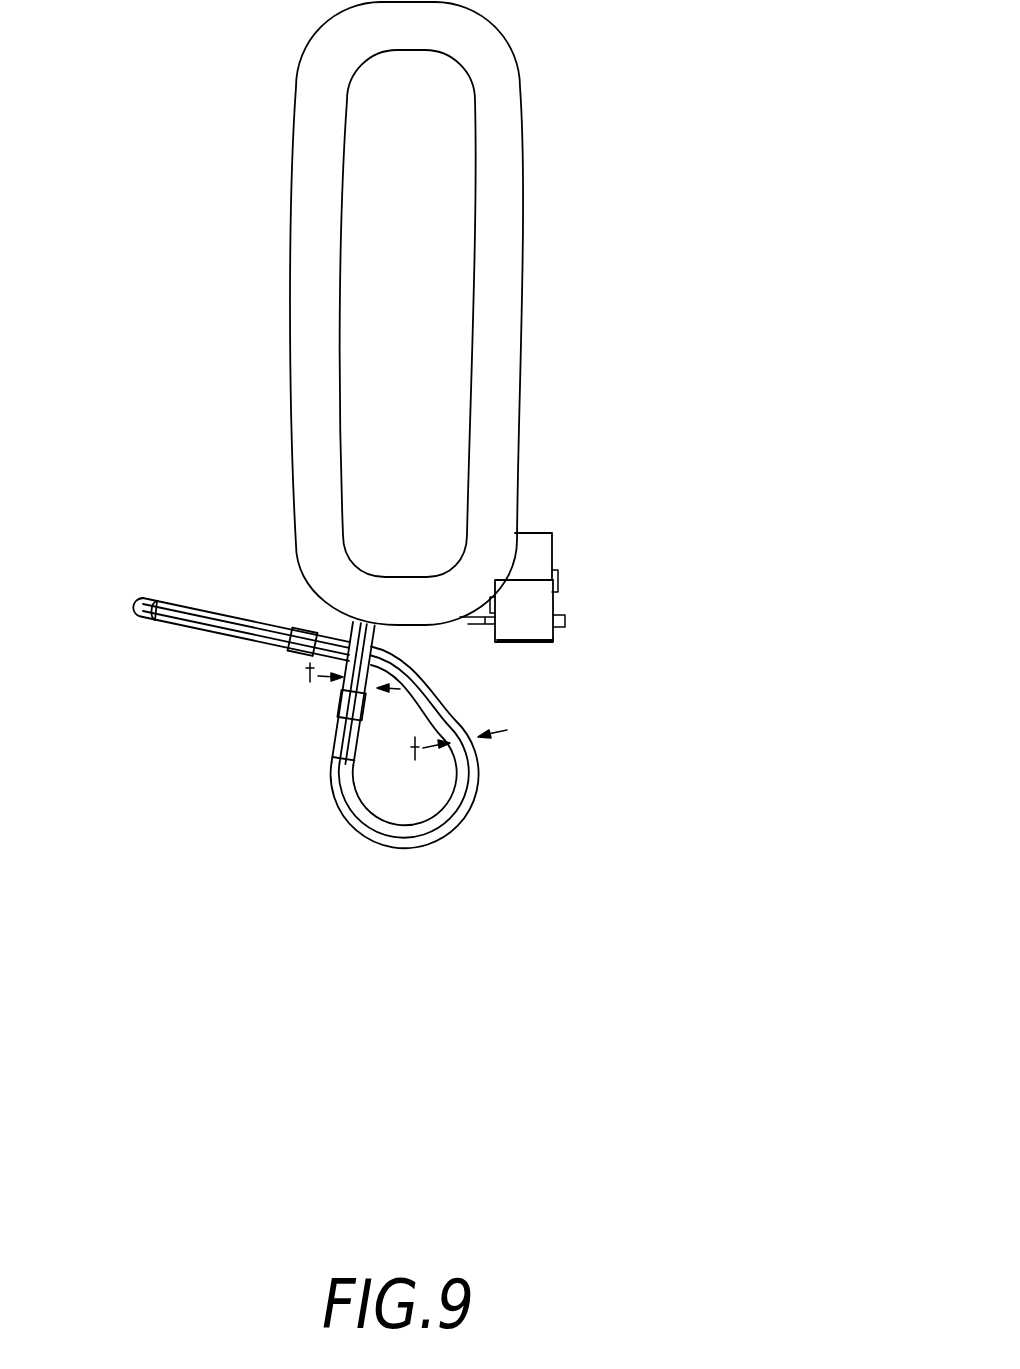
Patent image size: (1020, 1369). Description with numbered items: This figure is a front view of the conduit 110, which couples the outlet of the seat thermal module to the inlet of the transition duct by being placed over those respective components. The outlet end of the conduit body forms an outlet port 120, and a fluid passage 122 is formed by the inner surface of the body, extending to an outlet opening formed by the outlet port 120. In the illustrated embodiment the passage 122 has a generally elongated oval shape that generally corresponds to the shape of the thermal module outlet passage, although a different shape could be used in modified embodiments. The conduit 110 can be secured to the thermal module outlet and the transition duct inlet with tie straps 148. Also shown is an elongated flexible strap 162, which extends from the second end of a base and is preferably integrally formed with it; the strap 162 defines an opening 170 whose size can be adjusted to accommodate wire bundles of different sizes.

The conduit 110 is at (262, 190).
The outlet port 120 is at (475, 172).
The fluid passage 122 is at (426, 263).
The tie strap 148 is at (537, 645).
The strap 162 is at (348, 773).
The opening 170 is at (426, 800).